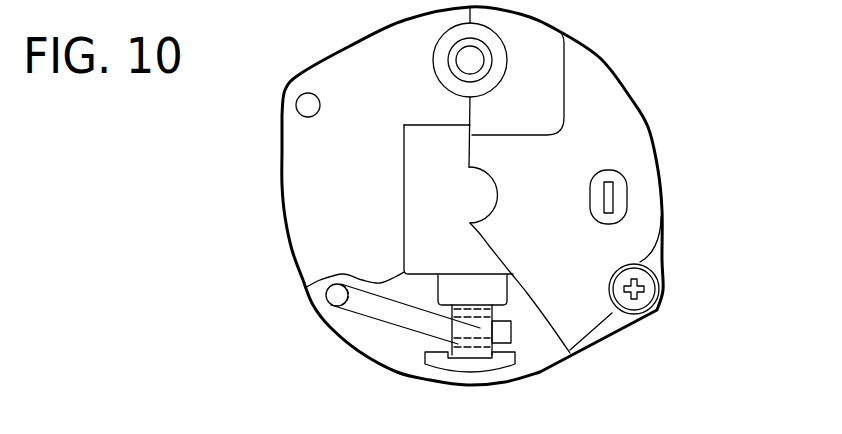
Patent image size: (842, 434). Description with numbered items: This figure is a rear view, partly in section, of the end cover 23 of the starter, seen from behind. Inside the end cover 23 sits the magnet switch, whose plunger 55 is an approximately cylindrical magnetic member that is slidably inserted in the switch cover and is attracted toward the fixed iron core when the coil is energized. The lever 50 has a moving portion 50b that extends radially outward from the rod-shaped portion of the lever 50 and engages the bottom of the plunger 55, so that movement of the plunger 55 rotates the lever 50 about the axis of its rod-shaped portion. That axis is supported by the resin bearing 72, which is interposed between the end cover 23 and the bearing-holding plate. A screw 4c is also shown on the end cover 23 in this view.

The end cover 23 is at (651, 116).
The screw 4c is at (645, 289).
The bearing 72 is at (302, 297).
The lever 50 is at (368, 342).
The moving portion 50b is at (362, 303).
The plunger 55 is at (469, 360).